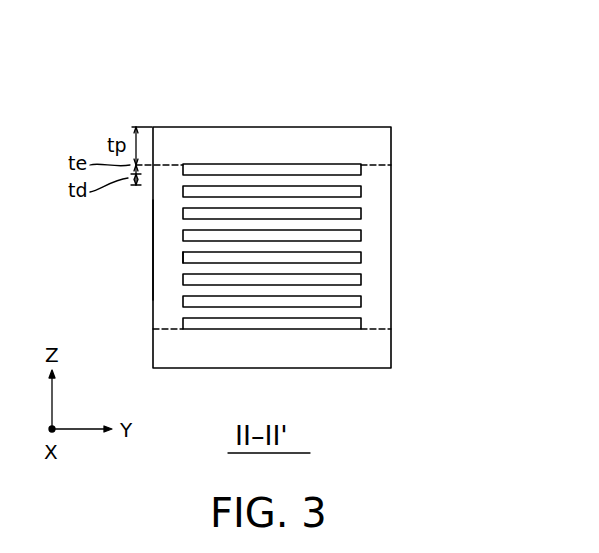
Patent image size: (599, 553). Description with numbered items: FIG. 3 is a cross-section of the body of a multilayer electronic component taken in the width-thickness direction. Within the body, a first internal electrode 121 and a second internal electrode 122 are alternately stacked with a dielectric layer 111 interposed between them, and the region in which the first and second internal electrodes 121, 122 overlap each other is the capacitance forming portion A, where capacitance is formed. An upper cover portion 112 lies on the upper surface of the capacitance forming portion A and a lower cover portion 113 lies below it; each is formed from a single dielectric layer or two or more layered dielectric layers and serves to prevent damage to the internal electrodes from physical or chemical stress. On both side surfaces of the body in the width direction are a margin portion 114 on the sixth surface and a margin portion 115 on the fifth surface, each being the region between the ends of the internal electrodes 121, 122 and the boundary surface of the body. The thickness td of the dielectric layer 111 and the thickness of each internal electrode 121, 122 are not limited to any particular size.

The dielectric layer 111 is at (362, 176).
The upper cover portion 112 is at (278, 147).
The lower cover portion 113 is at (385, 347).
The margin portion 114 is at (167, 287).
The margin portion 115 is at (385, 273).
The first internal electrode 121 is at (362, 166).
The second internal electrode 122 is at (362, 189).
The capacitance forming portion A is at (182, 249).